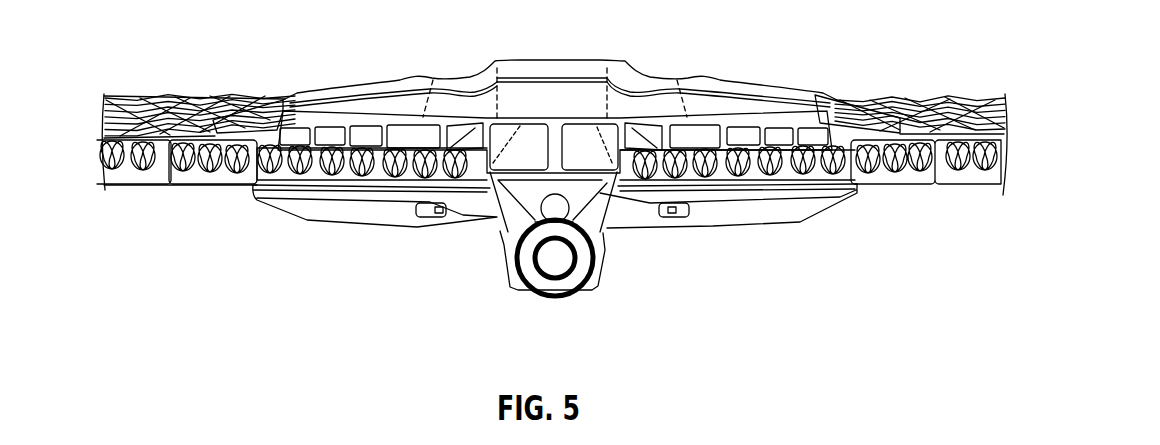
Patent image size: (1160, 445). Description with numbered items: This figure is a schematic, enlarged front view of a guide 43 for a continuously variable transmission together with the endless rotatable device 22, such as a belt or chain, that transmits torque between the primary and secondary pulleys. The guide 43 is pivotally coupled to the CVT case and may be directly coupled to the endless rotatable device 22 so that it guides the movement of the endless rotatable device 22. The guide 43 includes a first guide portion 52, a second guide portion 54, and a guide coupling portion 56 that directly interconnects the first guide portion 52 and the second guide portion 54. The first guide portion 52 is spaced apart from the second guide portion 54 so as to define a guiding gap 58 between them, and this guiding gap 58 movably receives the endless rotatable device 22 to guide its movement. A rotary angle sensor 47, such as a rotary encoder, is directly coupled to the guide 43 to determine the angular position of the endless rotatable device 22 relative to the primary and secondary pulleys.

The endless rotatable device 22 is at (915, 136).
The guide 43 is at (540, 73).
The rotary angle sensor 47 is at (538, 274).
The first guide portion 52 is at (403, 107).
The second guide portion 54 is at (725, 218).
The guide coupling portion 56 is at (530, 216).
The guiding gap 58 is at (683, 160).